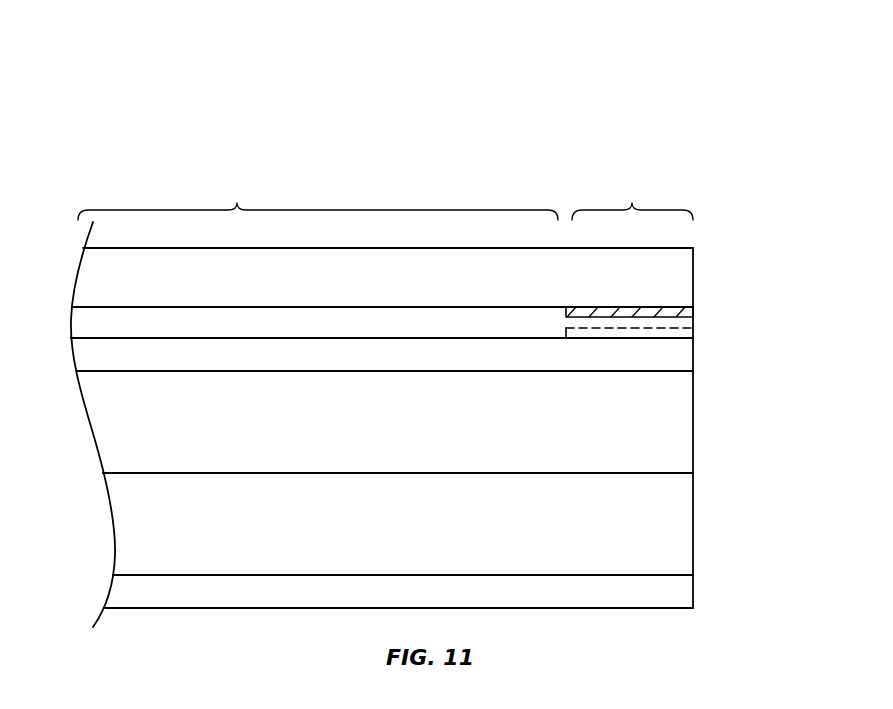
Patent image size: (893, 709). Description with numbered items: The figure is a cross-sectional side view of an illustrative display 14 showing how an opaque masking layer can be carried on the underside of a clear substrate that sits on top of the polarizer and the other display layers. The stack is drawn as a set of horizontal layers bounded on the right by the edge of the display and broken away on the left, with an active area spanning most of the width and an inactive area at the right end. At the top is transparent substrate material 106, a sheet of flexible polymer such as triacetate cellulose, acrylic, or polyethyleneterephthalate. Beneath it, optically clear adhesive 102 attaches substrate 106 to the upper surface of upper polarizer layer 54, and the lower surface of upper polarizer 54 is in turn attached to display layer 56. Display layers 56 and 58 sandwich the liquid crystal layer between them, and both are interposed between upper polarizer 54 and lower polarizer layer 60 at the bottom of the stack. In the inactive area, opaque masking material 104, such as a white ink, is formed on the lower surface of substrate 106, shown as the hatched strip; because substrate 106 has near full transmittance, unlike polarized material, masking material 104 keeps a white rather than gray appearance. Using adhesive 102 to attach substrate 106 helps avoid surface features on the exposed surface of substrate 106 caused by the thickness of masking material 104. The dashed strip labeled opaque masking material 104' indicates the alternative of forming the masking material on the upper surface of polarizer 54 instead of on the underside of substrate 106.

The display 14 is at (670, 88).
The transparent substrate material 106 is at (342, 258).
The optically clear adhesive 102 is at (75, 320).
The opaque masking material 104 is at (664, 320).
The opaque masking material 104' is at (666, 341).
The upper polarizer layer 54 is at (688, 355).
The display layer 56 is at (688, 425).
The display layer 58 is at (688, 525).
The lower polarizer layer 60 is at (688, 593).